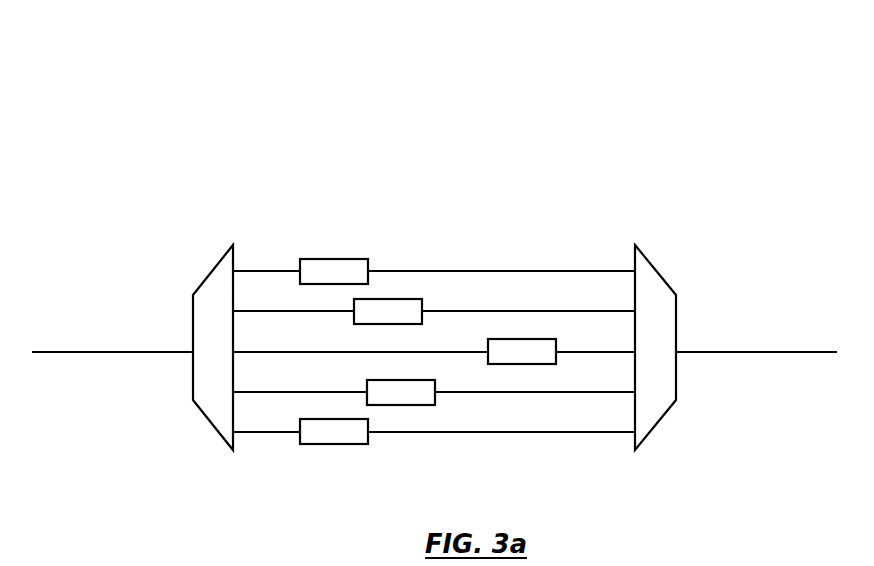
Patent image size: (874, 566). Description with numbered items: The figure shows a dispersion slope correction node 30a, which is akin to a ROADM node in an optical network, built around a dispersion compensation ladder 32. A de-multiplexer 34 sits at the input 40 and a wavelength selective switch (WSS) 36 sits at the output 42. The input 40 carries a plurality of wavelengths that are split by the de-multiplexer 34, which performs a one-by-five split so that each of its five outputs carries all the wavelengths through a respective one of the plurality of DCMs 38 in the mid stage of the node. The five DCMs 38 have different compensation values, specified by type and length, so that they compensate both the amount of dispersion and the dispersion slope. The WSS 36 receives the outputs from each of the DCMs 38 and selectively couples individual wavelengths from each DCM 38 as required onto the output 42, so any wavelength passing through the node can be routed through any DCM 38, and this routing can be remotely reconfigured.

The dispersion slope correction node 30a is at (678, 77).
The dispersion compensation ladder 32 is at (458, 217).
The de-multiplexer 34 is at (235, 246).
The wavelength selective switch (WSS) 36 is at (647, 253).
The DCMs 38 is at (353, 245).
The input 40 is at (95, 283).
The output 42 is at (745, 273).